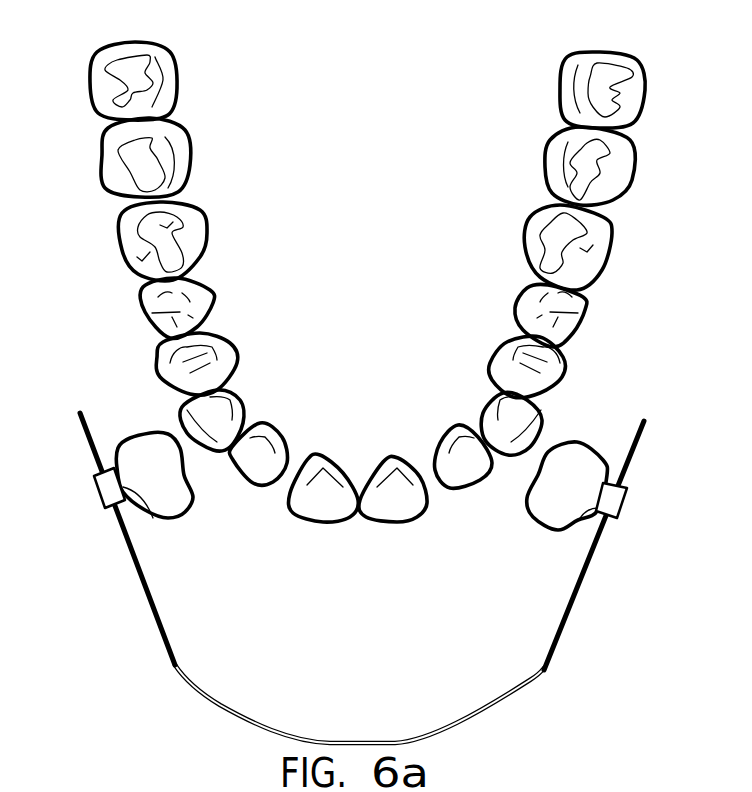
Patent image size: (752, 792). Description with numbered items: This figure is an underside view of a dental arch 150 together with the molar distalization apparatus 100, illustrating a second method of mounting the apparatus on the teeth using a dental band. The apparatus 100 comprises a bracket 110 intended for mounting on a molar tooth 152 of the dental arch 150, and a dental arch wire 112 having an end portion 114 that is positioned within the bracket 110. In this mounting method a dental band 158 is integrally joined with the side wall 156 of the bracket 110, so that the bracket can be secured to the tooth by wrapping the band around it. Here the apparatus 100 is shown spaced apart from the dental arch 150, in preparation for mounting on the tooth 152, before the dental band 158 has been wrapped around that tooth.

The apparatus 100 is at (105, 630).
The bracket 110 is at (96, 492).
The dental arch wire 112 is at (191, 688).
The end portion 114 is at (141, 583).
The dental arch 150 is at (88, 43).
The tooth 152 is at (199, 205).
The side wall 156 is at (153, 518).
The dental band 158 is at (195, 505).